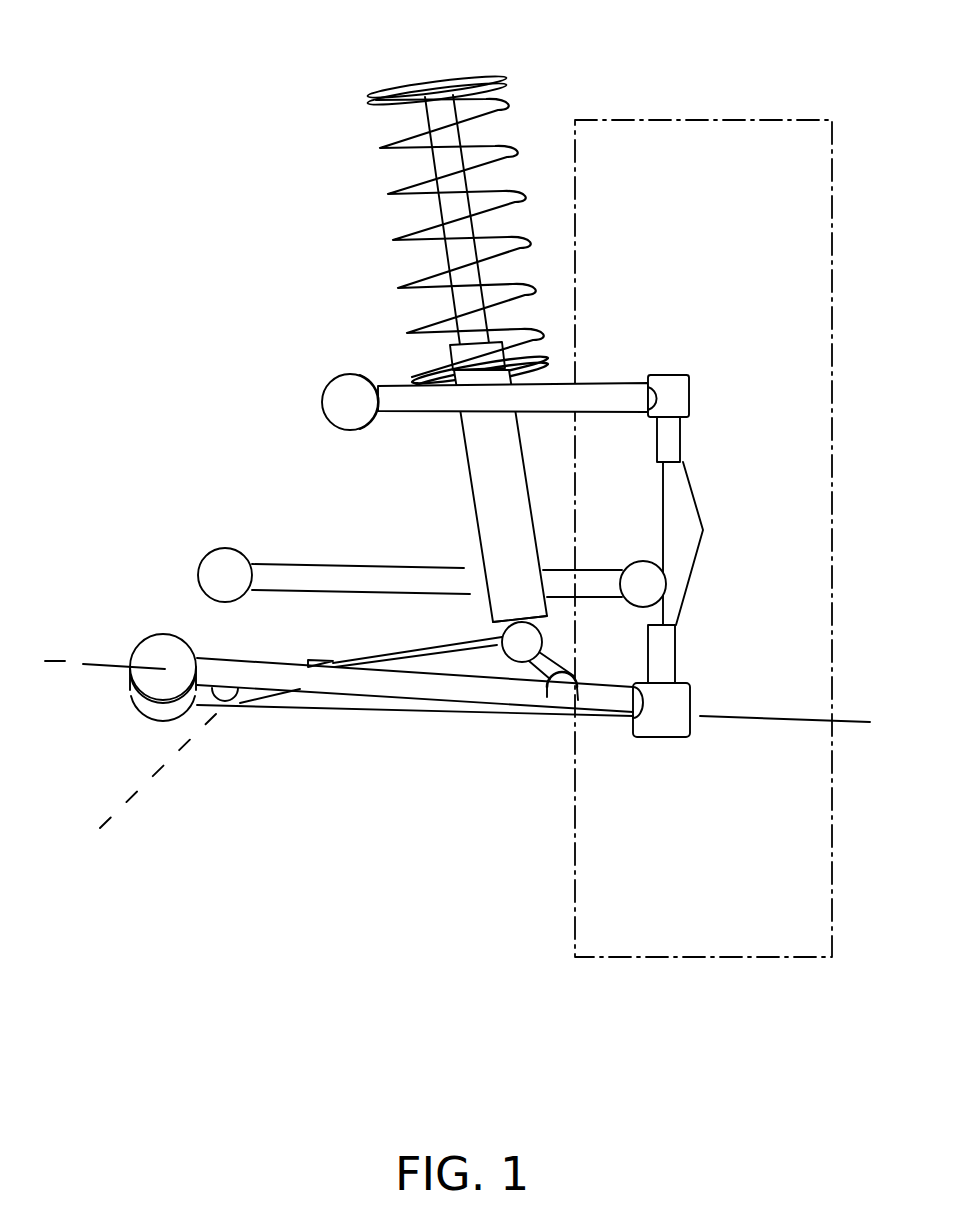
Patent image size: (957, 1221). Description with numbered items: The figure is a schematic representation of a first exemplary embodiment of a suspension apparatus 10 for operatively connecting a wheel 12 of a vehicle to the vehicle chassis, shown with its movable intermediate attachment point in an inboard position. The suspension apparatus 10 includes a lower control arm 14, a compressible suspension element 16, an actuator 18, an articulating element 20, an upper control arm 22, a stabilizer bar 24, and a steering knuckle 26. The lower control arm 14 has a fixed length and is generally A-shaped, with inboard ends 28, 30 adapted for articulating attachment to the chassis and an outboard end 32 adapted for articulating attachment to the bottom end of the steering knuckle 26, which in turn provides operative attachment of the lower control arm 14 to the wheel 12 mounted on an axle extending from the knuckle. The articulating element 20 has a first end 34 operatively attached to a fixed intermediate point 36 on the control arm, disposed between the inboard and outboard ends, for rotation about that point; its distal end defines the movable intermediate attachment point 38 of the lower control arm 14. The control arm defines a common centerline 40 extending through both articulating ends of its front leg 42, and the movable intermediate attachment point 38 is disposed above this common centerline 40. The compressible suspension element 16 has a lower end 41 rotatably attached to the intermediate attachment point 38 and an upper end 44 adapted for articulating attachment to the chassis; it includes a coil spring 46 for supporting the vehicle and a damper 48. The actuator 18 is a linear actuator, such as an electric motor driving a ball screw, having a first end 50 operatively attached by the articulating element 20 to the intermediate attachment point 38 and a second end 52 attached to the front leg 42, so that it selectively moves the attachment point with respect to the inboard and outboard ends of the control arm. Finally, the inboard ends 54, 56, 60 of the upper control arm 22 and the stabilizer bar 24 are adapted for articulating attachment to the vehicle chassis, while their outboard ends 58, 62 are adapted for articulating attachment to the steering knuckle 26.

The suspension apparatus 10 is at (281, 219).
The wheel 12 is at (685, 118).
The lower control arm 14 is at (480, 697).
The compressible suspension element 16 is at (470, 440).
The actuator 18 is at (387, 664).
The articulating element 20 is at (517, 698).
The upper control arm 22 is at (407, 387).
The stabilizer bar 24 is at (400, 578).
The steering knuckle 26 is at (687, 512).
The inboard end 28 is at (160, 660).
The inboard end 30 is at (162, 716).
The outboard end 32 is at (640, 735).
The first end 34 is at (548, 690).
The fixed intermediate point 36 is at (575, 690).
The movable intermediate attachment point 38 is at (500, 650).
The common centerline 40 is at (100, 665).
The lower end 41 is at (492, 606).
The front leg 42 is at (328, 684).
The upper end 44 is at (380, 88).
The coil spring 46 is at (395, 243).
The damper 48 is at (473, 487).
The first end 50 is at (500, 638).
The second end 52 is at (139, 778).
The inboard end 54 is at (348, 403).
The inboard end 56 is at (385, 420).
The outboard end 58 is at (675, 388).
The inboard end 60 is at (218, 577).
The outboard end 62 is at (645, 582).